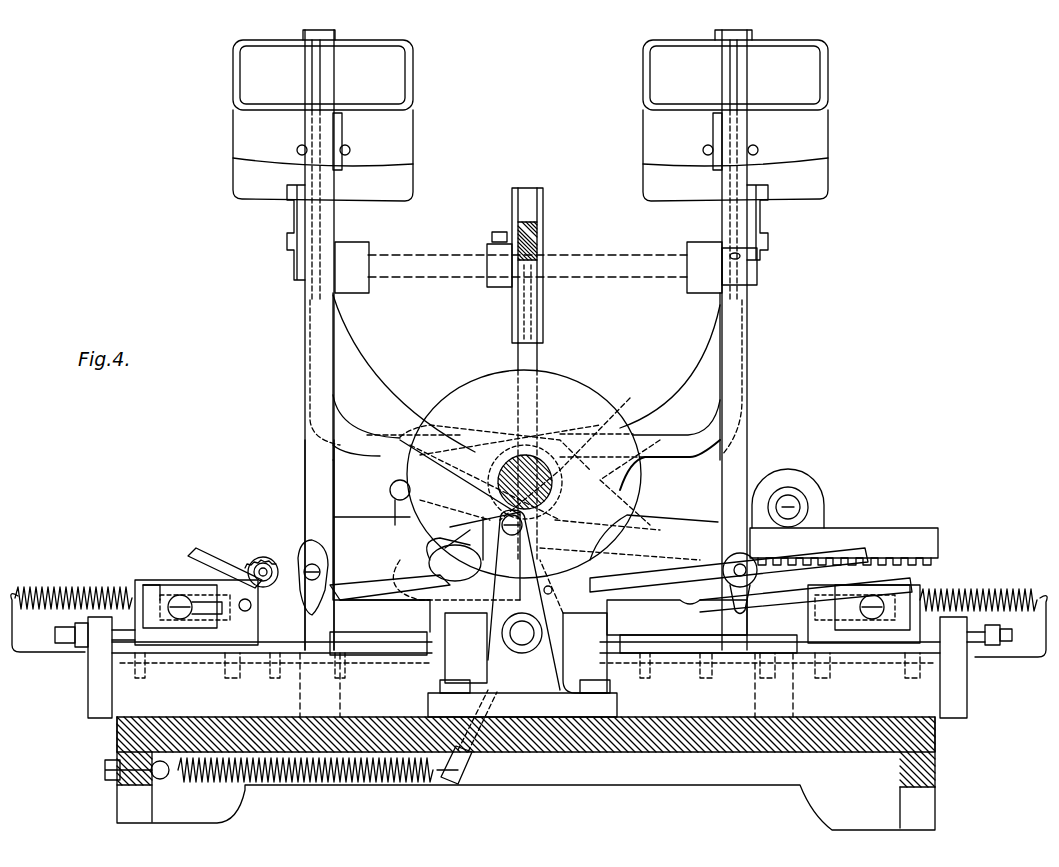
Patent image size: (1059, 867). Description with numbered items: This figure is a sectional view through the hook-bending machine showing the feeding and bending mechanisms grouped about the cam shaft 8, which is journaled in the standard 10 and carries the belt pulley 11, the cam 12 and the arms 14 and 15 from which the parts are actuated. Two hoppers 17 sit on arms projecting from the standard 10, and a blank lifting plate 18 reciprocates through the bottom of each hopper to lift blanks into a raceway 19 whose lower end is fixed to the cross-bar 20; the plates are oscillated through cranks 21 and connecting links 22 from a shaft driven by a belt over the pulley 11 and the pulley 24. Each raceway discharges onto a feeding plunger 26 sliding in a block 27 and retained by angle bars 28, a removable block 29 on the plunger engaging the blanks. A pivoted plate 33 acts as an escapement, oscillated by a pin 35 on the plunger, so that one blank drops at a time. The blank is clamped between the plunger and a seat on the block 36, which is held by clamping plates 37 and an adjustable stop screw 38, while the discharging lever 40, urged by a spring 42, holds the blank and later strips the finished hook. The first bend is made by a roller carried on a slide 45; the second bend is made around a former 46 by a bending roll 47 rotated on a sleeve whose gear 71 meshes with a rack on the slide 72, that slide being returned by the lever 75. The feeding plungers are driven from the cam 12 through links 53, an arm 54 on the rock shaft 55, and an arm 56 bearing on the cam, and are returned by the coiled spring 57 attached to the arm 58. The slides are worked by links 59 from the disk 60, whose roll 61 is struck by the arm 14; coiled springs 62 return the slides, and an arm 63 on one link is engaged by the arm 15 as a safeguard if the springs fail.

The cam shaft 8 is at (510, 483).
The standard 10 is at (365, 440).
The belt pulley 11 is at (640, 740).
The cam 12 is at (575, 375).
The arm 14 is at (560, 478).
The arm 15 is at (615, 410).
The hopper 17 is at (406, 86).
The blank lifting plate 18 is at (312, 82).
The raceway 19 is at (302, 476).
The cross-bar 20 is at (352, 532).
The crank 21 is at (750, 268).
The connecting link 22 is at (762, 224).
The pulley 24 is at (543, 210).
The feeding plunger 26 is at (432, 665).
The block 27 is at (128, 718).
The angle bar 28 is at (332, 655).
The block 29 is at (440, 252).
The plate 33 is at (738, 555).
The pin 35 is at (380, 627).
The block 36 is at (165, 648).
The clamping plate 37 is at (125, 655).
The adjustable stop screw 38 is at (115, 648).
The discharging device 40 is at (192, 552).
The spring 42 is at (152, 592).
The slide 45 is at (140, 592).
The former 46 is at (265, 615).
The bending roll 47 is at (780, 575).
The link 53 is at (526, 601).
The arm 54 is at (552, 592).
The rock shaft 55 is at (495, 588).
The arm 56 is at (568, 596).
The coiled spring 57 is at (350, 782).
The arm 58 is at (470, 768).
The link 59 is at (212, 632).
The disk 60 is at (454, 560).
The roll 61 is at (565, 530).
The coiled spring 62 is at (66, 580).
The arm 63 is at (412, 535).
The gear 71 is at (252, 560).
The slide 72 is at (850, 530).
The lever 75 is at (395, 470).